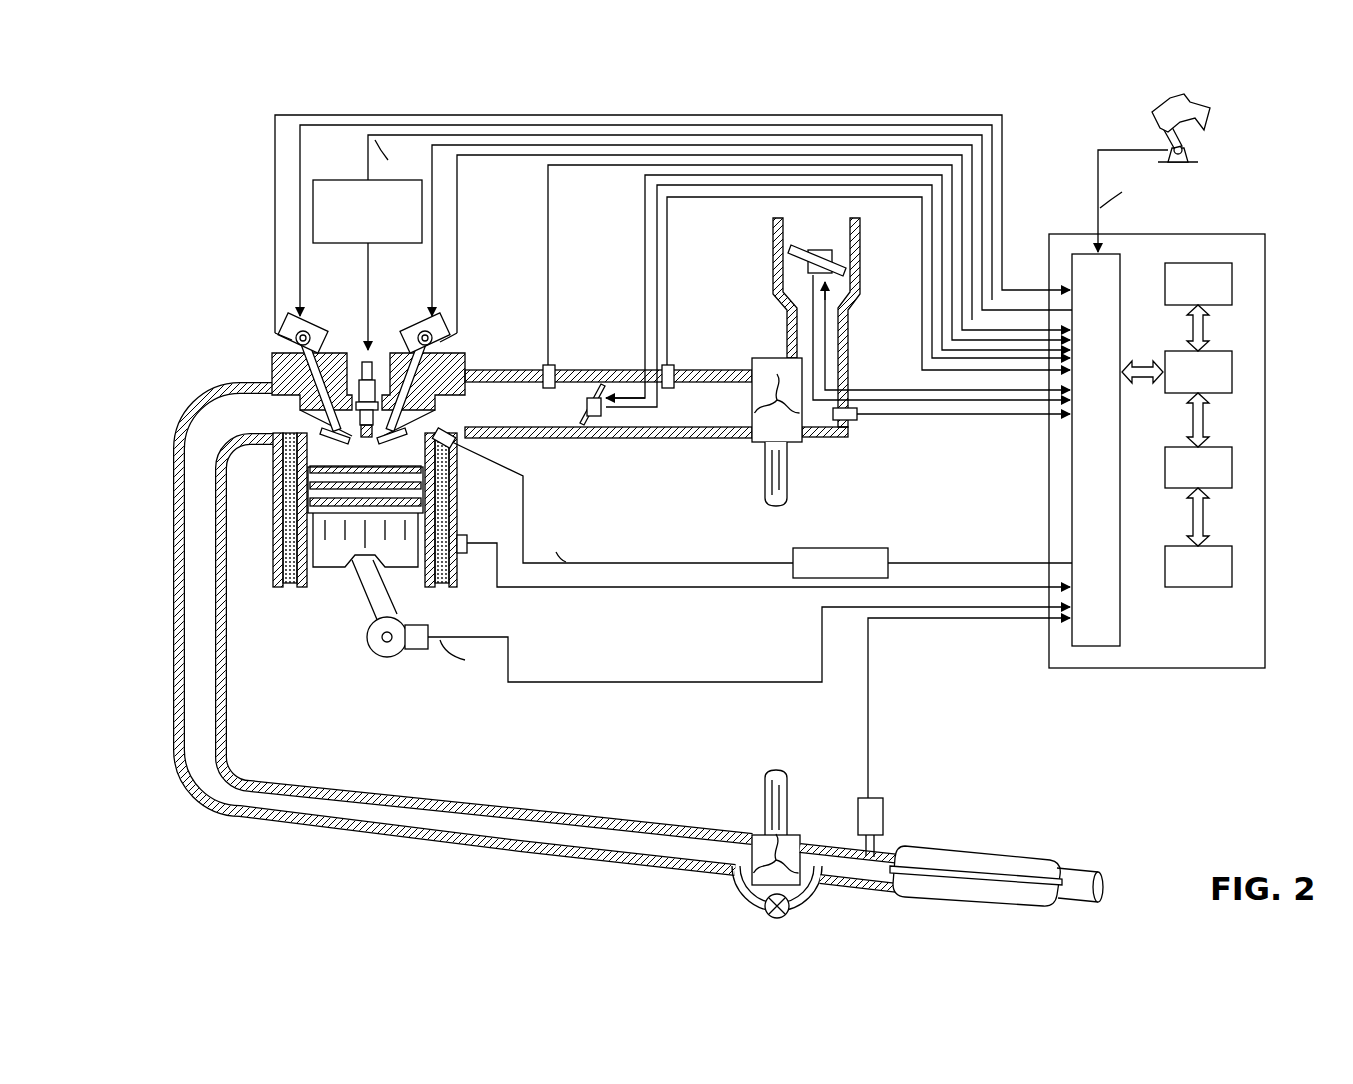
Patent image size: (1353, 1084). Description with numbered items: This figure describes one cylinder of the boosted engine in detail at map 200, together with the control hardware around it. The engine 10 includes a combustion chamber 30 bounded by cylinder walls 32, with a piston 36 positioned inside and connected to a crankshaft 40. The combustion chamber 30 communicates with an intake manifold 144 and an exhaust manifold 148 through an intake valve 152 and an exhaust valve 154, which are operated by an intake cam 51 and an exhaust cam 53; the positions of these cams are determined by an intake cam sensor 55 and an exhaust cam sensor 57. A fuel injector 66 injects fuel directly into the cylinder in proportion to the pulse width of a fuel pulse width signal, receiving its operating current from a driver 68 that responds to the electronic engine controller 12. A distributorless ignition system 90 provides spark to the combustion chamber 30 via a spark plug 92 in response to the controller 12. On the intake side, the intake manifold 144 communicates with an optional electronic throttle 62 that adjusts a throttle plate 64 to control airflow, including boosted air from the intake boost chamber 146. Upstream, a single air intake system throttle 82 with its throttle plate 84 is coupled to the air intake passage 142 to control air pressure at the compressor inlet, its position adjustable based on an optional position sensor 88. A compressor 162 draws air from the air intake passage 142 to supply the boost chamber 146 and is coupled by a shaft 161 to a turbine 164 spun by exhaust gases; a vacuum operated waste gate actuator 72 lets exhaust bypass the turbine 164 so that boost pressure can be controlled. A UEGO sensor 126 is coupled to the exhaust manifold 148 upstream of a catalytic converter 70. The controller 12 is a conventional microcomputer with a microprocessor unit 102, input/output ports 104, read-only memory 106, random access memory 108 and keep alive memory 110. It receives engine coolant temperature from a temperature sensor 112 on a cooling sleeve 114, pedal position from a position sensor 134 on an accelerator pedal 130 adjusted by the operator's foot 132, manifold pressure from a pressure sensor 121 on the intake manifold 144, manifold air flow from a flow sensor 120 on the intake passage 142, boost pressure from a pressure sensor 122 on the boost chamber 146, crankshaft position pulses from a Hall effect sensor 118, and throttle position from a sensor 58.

The map 200 is at (135, 152).
The engine 10 is at (213, 312).
The electronic engine controller 12 is at (1193, 436).
The combustion chamber 30 is at (363, 447).
The cylinder walls 32 is at (377, 538).
The piston 36 is at (350, 540).
The crankshaft 40 is at (376, 650).
The intake cam 51 is at (422, 322).
The exhaust cam 53 is at (300, 325).
The intake cam sensor 55 is at (440, 344).
The exhaust cam sensor 57 is at (290, 336).
The throttle position sensor 58 is at (598, 416).
The electronic throttle 62 is at (615, 393).
The throttle plate 64 is at (598, 388).
The fuel injector 66 is at (455, 447).
The driver 68 is at (890, 565).
The catalytic converter 70 is at (905, 897).
The waste gate actuator 72 is at (765, 906).
The air intake system throttle 82 is at (792, 258).
The throttle plate 84 is at (806, 262).
The position sensor 88 is at (800, 270).
The distributorless ignition system 90 is at (325, 180).
The spark plug 92 is at (372, 360).
The microprocessor unit 102 is at (1236, 365).
The input/output ports 104 is at (1125, 262).
The read-only memory 106 is at (1236, 278).
The random access memory 108 is at (1236, 460).
The keep alive memory 110 is at (1236, 559).
The temperature sensor 112 is at (466, 540).
The cooling sleeve 114 is at (440, 584).
The Hall effect sensor 118 is at (412, 650).
The flow sensor 120 is at (852, 421).
The pressure sensor 121 is at (545, 367).
The pressure sensor 122 is at (671, 367).
The UEGO sensor 126 is at (882, 800).
The accelerator pedal 130 is at (1201, 137).
The foot 132 is at (1208, 112).
The position sensor 134 is at (1190, 150).
The air intake passage 142 is at (801, 242).
The intake manifold 144 is at (492, 416).
The intake boost chamber 146 is at (667, 416).
The exhaust manifold 148 is at (229, 423).
The intake valve 152 is at (405, 418).
The exhaust valve 154 is at (318, 395).
The shaft 161 is at (765, 465).
The compressor 162 is at (796, 443).
The turbine 164 is at (752, 840).